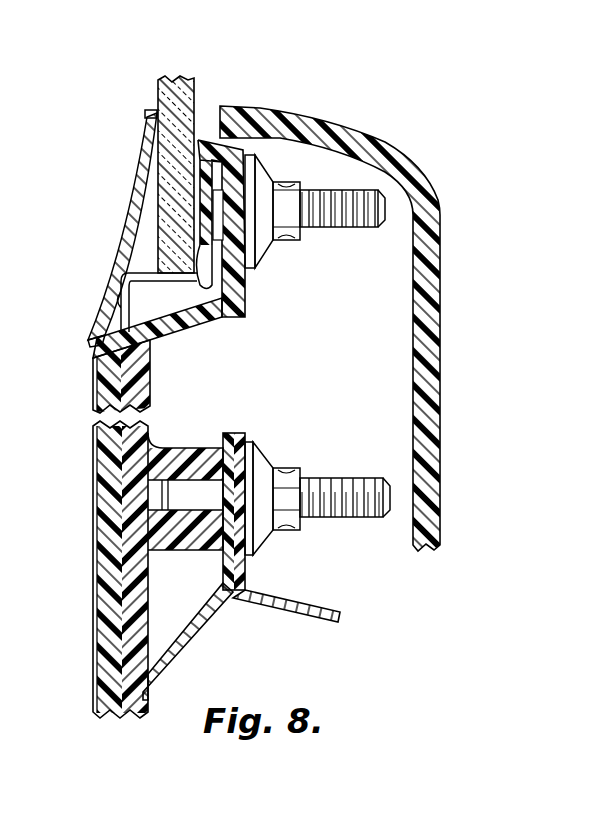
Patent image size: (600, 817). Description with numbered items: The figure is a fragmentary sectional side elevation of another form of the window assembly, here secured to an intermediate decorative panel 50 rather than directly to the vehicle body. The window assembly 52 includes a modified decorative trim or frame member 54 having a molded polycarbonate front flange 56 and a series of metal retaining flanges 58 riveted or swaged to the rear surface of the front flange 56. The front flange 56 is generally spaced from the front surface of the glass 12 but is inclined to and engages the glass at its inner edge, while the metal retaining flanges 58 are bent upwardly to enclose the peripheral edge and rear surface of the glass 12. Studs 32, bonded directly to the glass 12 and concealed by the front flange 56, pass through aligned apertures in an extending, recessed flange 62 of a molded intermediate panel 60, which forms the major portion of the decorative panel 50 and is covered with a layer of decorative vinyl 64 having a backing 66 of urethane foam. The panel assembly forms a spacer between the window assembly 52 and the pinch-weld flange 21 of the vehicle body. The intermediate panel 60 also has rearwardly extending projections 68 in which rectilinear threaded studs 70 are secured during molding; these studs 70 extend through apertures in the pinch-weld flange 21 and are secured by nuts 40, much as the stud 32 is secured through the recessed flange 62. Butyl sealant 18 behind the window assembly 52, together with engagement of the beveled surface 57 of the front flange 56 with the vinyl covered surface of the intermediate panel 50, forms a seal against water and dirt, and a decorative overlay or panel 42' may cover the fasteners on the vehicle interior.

The glass 12 is at (162, 80).
The butyl sealant 18 is at (200, 140).
The pinch-weld flange 21 is at (238, 564).
The stud 32 is at (339, 190).
The nut 40 is at (284, 234).
The decorative overlay or panel 42' is at (330, 308).
The intermediate decorative panel 50 is at (92, 403).
The window assembly 52 is at (134, 124).
The decorative trim or frame member 54 is at (130, 177).
The front flange 56 is at (126, 278).
The beveled surface 57 is at (88, 344).
The metal retaining flange 58 is at (162, 282).
The intermediate panel 60 is at (180, 336).
The recessed flange 62 is at (240, 295).
The decorative vinyl layer 64 is at (92, 546).
The urethane foam backing 66 is at (117, 597).
The projection 68 is at (181, 457).
The threaded stud 70 is at (353, 490).